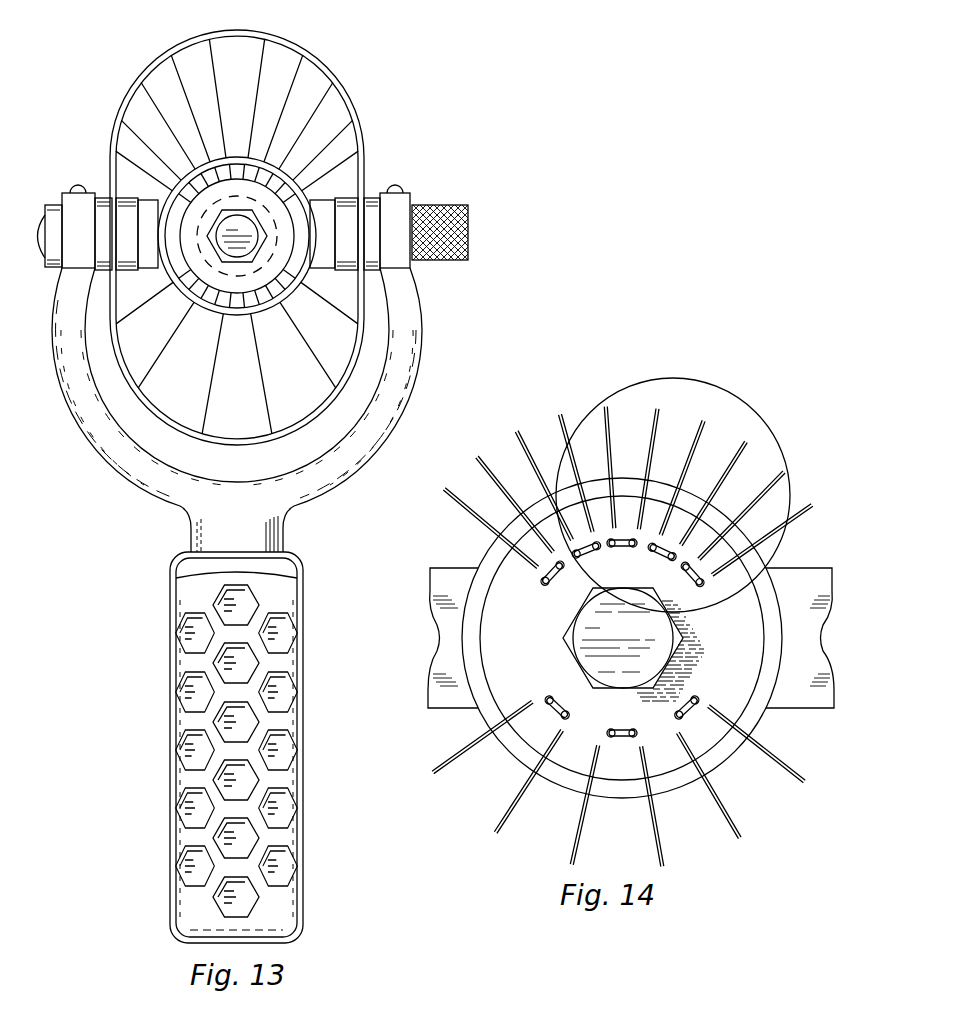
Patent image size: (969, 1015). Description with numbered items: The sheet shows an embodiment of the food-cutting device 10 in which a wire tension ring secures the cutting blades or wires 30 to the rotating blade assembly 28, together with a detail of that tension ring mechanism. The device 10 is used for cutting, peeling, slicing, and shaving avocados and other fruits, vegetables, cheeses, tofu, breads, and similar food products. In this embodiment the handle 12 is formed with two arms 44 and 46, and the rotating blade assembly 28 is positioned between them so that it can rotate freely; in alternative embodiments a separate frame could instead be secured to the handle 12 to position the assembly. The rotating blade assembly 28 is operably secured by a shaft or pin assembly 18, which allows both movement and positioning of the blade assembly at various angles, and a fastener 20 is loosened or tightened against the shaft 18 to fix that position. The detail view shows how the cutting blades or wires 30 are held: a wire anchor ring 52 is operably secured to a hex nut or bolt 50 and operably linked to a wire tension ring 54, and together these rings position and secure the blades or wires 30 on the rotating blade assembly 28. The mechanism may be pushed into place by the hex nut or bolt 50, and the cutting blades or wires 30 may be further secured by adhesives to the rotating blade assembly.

In FIG. 13, the device 10 is at (140, 565).
In FIG. 13, the handle 12 is at (187, 778).
In FIG. 13, the shaft or pin assembly 18 is at (370, 208).
In FIG. 14, the shaft or pin assembly 18 is at (443, 700).
In FIG. 13, the fastener 20 is at (458, 259).
In FIG. 13, the rotating blade assembly 28 is at (118, 100).
In FIG. 13, the cutting blades or wires 30 is at (133, 134).
In FIG. 14, the cutting blades or wires 30 is at (723, 803).
In FIG. 13, the arm 44 is at (410, 382).
In FIG. 13, the arm 46 is at (63, 407).
In FIG. 13, the hex nut or bolt 50 is at (263, 222).
In FIG. 14, the hex nut or bolt 50 is at (593, 625).
In FIG. 13, the wire anchor ring 52 is at (218, 283).
In FIG. 14, the wire anchor ring 52 is at (627, 533).
In FIG. 13, the wire tension ring 54 is at (183, 294).
In FIG. 14, the wire tension ring 54 is at (755, 718).